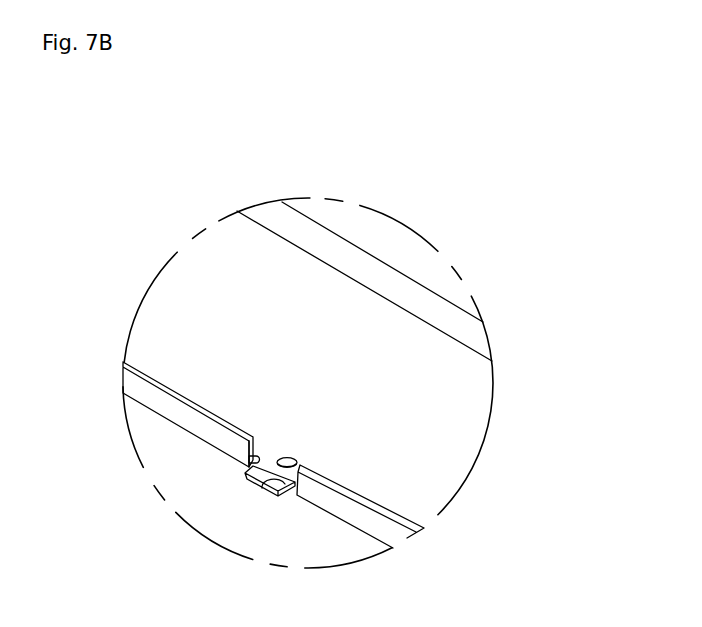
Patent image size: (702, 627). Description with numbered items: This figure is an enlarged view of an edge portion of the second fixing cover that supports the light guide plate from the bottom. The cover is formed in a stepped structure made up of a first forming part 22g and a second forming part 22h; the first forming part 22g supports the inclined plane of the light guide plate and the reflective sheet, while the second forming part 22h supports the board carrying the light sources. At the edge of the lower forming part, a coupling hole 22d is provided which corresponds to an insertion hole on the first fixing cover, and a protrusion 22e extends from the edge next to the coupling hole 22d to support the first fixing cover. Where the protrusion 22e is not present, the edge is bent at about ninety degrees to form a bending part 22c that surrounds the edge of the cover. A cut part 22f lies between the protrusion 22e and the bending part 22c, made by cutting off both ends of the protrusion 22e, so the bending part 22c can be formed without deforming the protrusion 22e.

The bending part 22c is at (347, 512).
The coupling hole 22d is at (290, 457).
The protrusion 22e is at (272, 473).
The cut part 22f is at (258, 473).
The first forming part 22g is at (338, 220).
The second forming part 22h is at (373, 393).